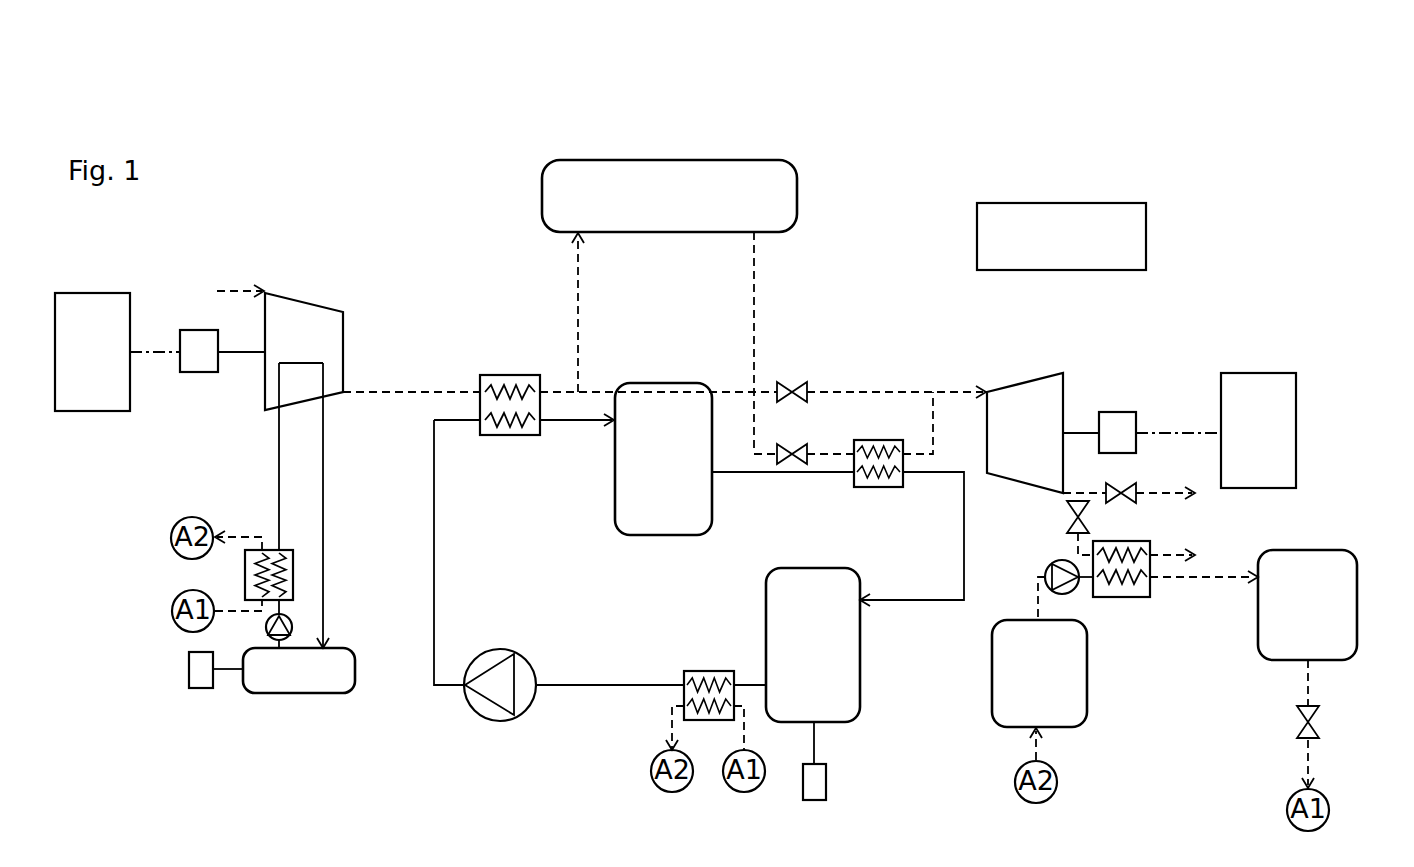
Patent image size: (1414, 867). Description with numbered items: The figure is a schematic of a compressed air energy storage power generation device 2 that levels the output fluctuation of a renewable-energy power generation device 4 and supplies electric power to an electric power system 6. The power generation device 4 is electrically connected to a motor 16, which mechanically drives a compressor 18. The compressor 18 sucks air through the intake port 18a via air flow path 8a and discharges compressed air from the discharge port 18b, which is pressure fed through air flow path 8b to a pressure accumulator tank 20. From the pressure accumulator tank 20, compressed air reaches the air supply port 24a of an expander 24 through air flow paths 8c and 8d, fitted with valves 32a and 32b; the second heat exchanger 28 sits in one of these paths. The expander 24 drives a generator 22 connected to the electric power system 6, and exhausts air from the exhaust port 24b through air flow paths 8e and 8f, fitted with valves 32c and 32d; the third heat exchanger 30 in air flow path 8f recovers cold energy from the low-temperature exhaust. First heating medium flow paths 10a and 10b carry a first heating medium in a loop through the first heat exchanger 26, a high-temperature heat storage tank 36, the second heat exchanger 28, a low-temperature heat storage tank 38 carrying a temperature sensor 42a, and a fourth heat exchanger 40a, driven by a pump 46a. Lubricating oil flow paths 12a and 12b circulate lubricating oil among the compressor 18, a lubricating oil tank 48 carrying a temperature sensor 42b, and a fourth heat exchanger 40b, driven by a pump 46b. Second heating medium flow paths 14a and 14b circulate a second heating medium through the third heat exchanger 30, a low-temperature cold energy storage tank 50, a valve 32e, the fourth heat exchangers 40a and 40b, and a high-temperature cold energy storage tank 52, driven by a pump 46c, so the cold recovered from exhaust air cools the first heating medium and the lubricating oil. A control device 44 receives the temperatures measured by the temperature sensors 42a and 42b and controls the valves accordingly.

The compressed air energy storage power generation device 2 is at (318, 207).
The power generation device 4 is at (100, 411).
The electric power system 6 is at (1258, 373).
The air flow path 8a is at (258, 290).
The air flow path 8b is at (578, 322).
The air flow path 8c is at (872, 392).
The air flow path 8d is at (933, 422).
The air flow path 8e is at (1150, 493).
The air flow path 8f is at (1170, 555).
The first heating medium flow path 10a is at (647, 685).
The first heating medium flow path 10b is at (964, 540).
The lubricating oil flow path 12a is at (279, 472).
The lubricating oil flow path 12b is at (323, 477).
The second heating medium flow path 14a is at (1195, 582).
The second heating medium flow path 14b is at (240, 535).
The motor 16 is at (203, 372).
The compressor 18 is at (310, 304).
The intake port 18a is at (266, 292).
The discharge port 18b is at (345, 392).
The pressure accumulator tank 20 is at (797, 190).
The generator 22 is at (1120, 412).
The expander 24 is at (1025, 383).
The air supply port 24a is at (987, 392).
The exhaust port 24b is at (1063, 493).
The first heat exchanger 26 is at (518, 435).
The second heat exchanger 28 is at (854, 487).
The third heat exchanger 30 is at (1128, 597).
The valve 32a is at (785, 382).
The valve 32b is at (798, 432).
The valve 32c is at (1118, 483).
The valve 32d is at (1090, 514).
The valve 32e is at (1300, 730).
The high-temperature heat storage tank 36 is at (662, 383).
The low-temperature heat storage tank 38 is at (766, 592).
The fourth heat exchanger 40a is at (700, 671).
The fourth heat exchanger 40b is at (245, 580).
The temperature sensor 42a is at (826, 780).
The temperature sensor 42b is at (189, 670).
The control device 44 is at (1146, 215).
The pump 46a is at (522, 652).
The pump 46b is at (292, 627).
The pump 46c is at (1045, 572).
The lubricating oil tank 48 is at (355, 686).
The low-temperature cold energy storage tank 50 is at (1300, 550).
The high-temperature cold energy storage tank 52 is at (1087, 700).